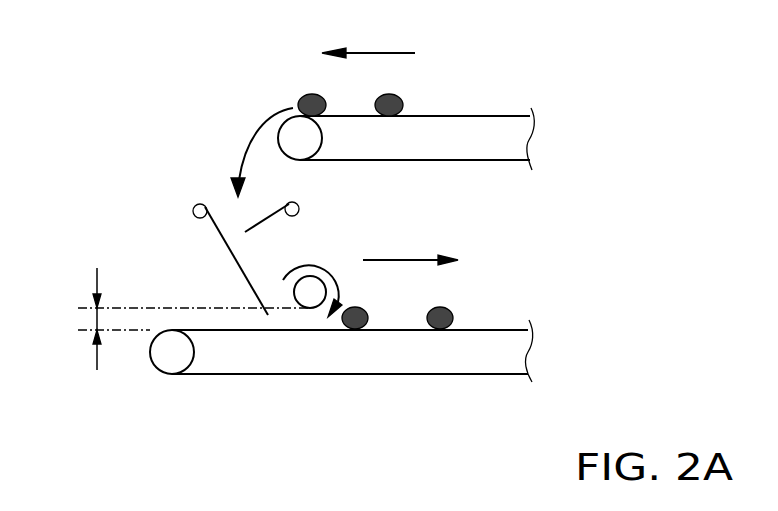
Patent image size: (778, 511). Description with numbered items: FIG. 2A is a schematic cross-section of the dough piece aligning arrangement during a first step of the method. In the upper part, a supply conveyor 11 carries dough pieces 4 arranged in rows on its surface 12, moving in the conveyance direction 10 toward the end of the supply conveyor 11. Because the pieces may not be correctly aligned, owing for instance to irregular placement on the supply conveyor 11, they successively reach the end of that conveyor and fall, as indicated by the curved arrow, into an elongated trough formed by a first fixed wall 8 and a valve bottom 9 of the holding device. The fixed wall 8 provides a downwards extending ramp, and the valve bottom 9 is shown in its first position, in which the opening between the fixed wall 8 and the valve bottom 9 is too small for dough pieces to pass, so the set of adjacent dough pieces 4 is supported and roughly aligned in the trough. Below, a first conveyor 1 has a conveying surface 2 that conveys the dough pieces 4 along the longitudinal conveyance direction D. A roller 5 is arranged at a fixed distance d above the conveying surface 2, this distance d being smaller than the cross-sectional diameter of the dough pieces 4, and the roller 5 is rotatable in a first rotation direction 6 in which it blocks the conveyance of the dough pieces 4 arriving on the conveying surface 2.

The first conveyor 1 is at (341, 348).
The conveying surface 2 is at (493, 330).
The dough pieces 4 is at (385, 97).
The roller 5 is at (317, 290).
The first rotation direction 6 is at (288, 278).
The first fixed wall 8 is at (240, 263).
The valve bottom 9 is at (257, 222).
The conveyance direction 10 is at (368, 39).
The supply conveyor 11 is at (443, 116).
The surface of the supply conveyor 12 is at (488, 116).
The longitudinal conveyance direction D is at (410, 249).
The distance d is at (93, 318).